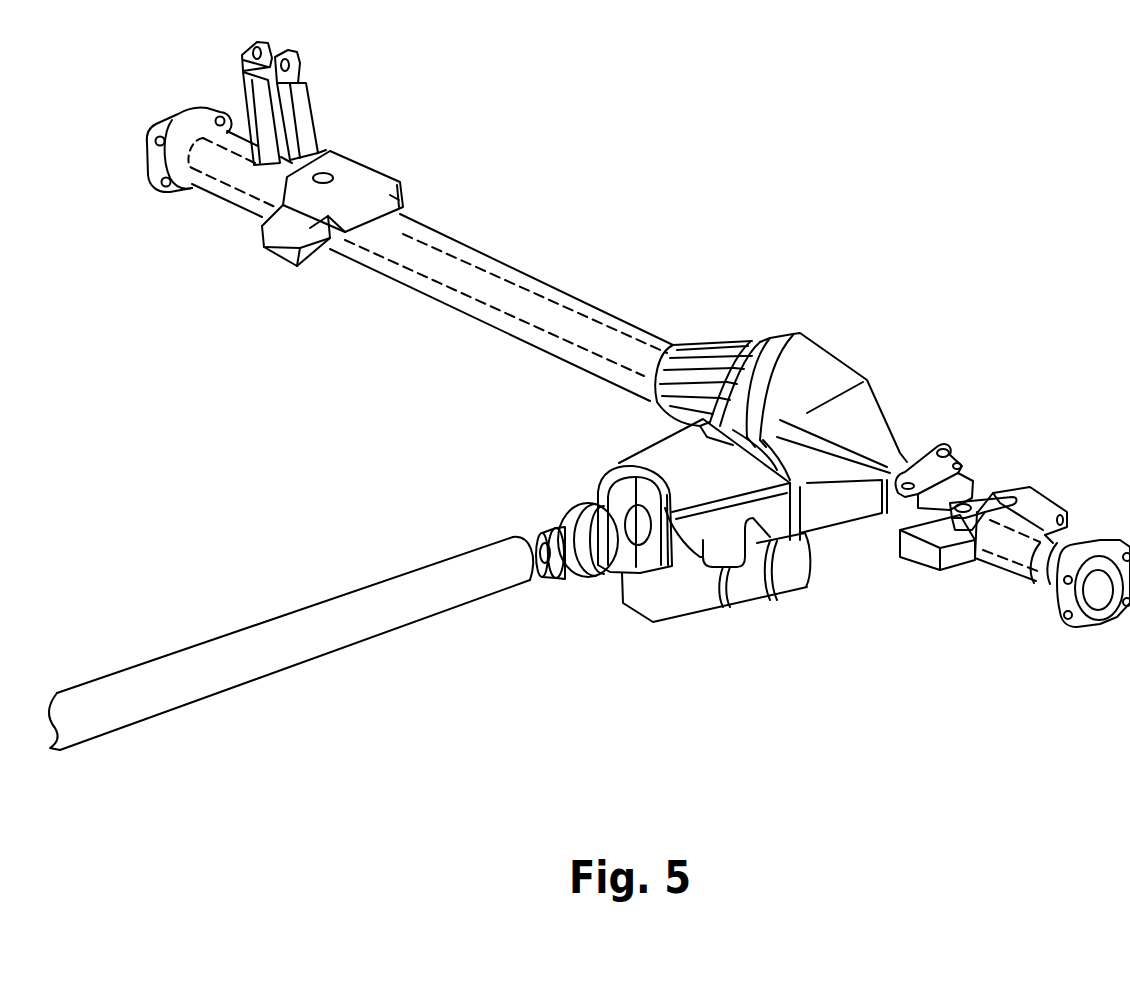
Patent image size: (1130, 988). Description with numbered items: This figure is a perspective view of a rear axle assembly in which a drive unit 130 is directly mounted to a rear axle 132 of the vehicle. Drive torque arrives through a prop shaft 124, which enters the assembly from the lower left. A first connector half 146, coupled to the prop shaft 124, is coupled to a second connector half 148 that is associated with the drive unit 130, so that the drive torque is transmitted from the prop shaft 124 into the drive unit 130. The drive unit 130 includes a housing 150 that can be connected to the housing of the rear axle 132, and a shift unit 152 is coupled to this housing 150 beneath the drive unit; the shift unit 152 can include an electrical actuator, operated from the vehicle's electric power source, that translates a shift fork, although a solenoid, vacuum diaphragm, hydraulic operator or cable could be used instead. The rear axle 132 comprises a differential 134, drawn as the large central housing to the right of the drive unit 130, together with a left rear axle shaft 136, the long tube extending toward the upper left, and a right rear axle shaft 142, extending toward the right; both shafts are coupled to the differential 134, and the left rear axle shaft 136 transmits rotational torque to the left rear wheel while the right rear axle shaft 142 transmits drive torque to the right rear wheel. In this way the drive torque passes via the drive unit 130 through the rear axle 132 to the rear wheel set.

The prop shaft 124 is at (270, 643).
The drive unit 130 is at (636, 447).
The rear axle 132 is at (711, 322).
The differential 134 is at (835, 372).
The left rear axle shaft 136 is at (543, 313).
The right rear axle shaft 142 is at (1068, 535).
The first connector half 146 is at (562, 578).
The second connector half 148 is at (575, 507).
The housing 150 is at (630, 463).
The shift unit 152 is at (783, 580).